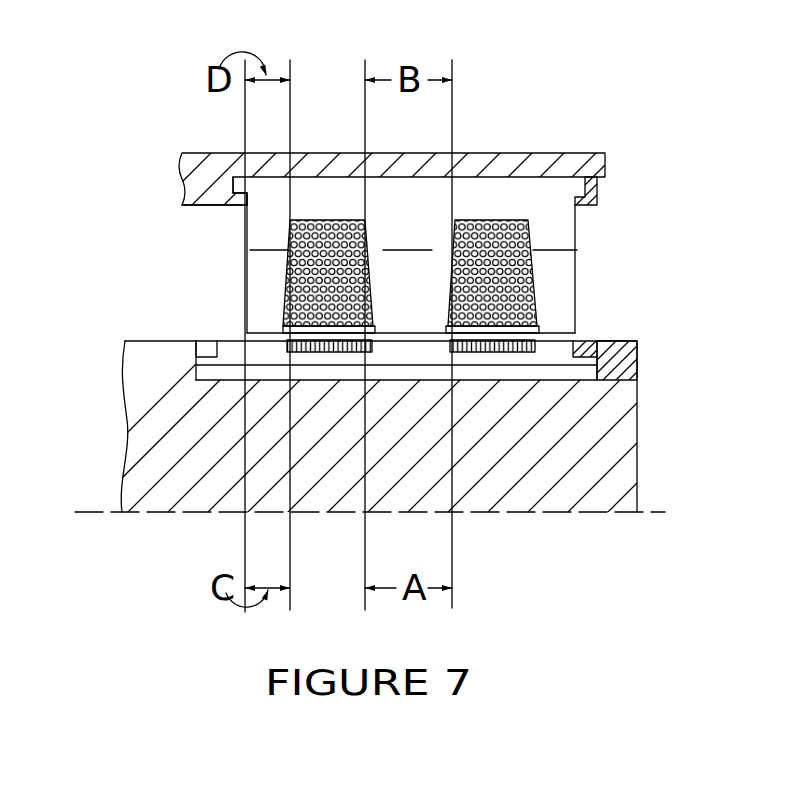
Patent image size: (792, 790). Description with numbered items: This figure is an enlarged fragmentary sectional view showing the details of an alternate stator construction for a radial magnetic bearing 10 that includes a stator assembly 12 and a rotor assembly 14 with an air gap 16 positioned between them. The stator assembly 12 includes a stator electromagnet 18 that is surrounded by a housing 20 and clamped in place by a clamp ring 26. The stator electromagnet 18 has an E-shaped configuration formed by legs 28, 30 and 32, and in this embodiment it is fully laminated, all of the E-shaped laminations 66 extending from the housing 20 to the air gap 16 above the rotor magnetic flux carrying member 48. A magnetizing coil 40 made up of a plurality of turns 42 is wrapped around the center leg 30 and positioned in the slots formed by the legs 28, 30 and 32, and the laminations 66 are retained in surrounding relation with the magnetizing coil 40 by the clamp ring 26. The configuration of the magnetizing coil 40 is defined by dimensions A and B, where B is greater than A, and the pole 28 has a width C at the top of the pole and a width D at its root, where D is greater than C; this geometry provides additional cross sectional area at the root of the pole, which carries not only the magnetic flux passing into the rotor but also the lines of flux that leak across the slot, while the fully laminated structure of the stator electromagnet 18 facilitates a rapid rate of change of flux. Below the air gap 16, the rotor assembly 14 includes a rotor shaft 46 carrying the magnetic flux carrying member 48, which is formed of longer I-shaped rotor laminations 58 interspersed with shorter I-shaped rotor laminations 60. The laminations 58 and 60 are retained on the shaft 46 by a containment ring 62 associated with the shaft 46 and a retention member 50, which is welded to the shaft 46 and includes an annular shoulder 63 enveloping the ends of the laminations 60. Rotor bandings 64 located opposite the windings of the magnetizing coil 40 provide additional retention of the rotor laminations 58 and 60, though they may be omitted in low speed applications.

The radial magnetic bearing 10 is at (130, 138).
The stator assembly 12 is at (606, 150).
The rotor assembly 14 is at (143, 393).
The air gap 16 is at (249, 335).
The stator electromagnet 18 is at (222, 272).
The housing 20 is at (203, 183).
The clamp ring 26 is at (600, 186).
The outer leg / pole 28 is at (273, 229).
The center leg 30 is at (407, 229).
The outer leg 32 is at (556, 229).
The magnetizing coil 40 is at (341, 217).
The turns 42 is at (300, 219).
The rotor shaft 46 is at (117, 382).
The magnetic flux carrying member 48 is at (578, 340).
The retention member 50 is at (633, 378).
The I-shaped rotor laminations 58 is at (520, 380).
The I-shaped rotor laminations 60 is at (567, 363).
The containment ring 62 is at (200, 352).
The annular shoulder 63 is at (594, 346).
The rotor bandings 64 is at (358, 353).
The E-shaped laminations 66 is at (491, 193).